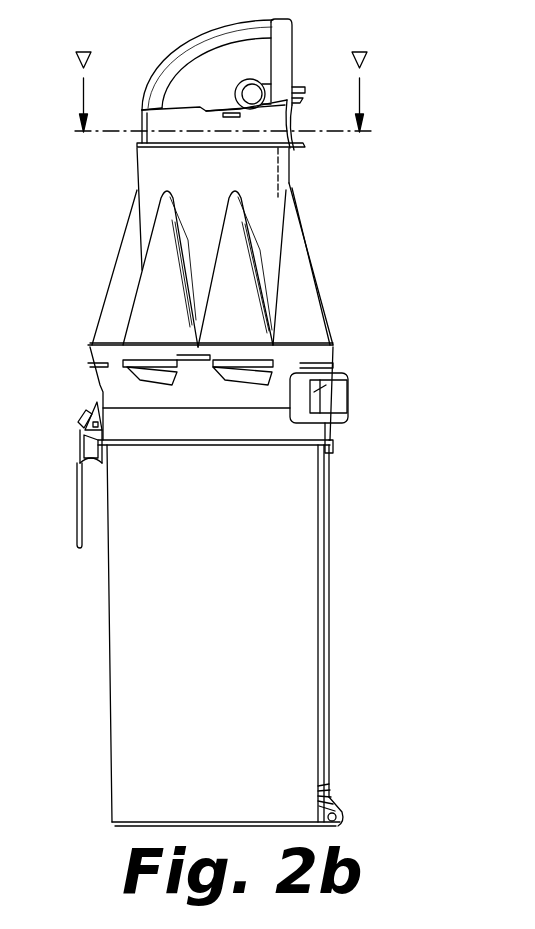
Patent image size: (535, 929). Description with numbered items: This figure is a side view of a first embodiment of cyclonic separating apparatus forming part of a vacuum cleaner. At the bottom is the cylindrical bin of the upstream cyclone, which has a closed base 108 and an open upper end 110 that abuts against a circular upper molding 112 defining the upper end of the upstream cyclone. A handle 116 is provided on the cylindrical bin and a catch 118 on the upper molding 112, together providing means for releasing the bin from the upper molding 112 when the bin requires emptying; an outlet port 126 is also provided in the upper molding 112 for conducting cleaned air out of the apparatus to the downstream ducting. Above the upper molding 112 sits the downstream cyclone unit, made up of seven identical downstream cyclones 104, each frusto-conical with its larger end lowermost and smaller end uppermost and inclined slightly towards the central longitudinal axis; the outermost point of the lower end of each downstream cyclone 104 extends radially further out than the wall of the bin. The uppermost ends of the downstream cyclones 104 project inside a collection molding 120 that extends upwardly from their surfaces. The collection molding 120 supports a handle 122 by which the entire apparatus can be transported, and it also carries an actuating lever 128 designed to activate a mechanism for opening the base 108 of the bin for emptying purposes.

The downstream cyclones 104 is at (132, 248).
The closed base 108 is at (120, 827).
The open upper end 110 is at (302, 443).
The upper molding 112 is at (123, 392).
The handle 116 is at (75, 513).
The catch 118 is at (82, 413).
The collection molding 120 is at (273, 134).
The handle 122 is at (198, 50).
The outlet port 126 is at (347, 403).
The actuating lever 128 is at (257, 80).